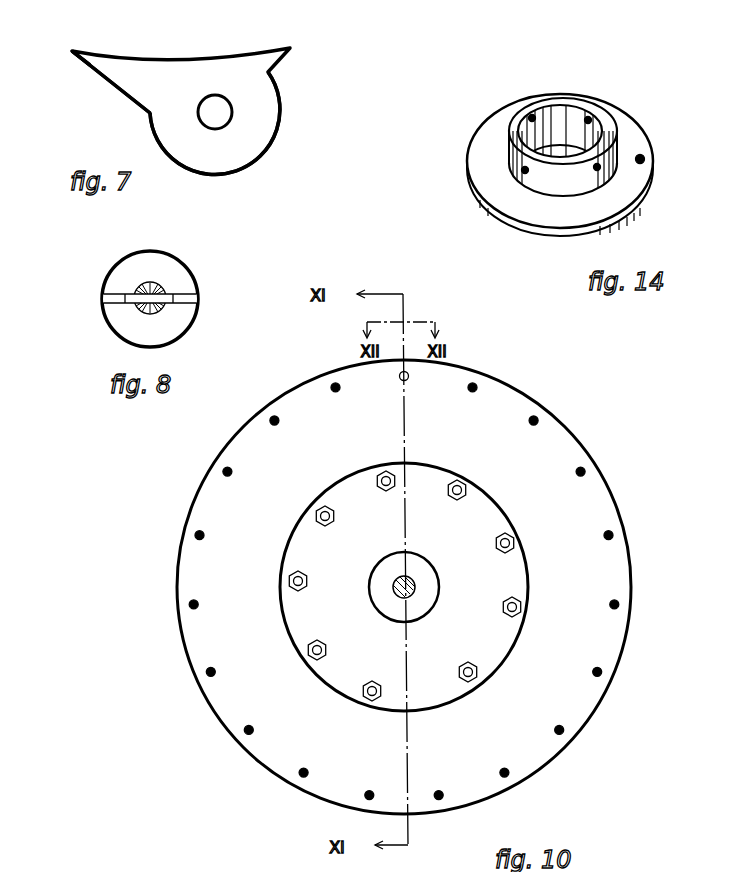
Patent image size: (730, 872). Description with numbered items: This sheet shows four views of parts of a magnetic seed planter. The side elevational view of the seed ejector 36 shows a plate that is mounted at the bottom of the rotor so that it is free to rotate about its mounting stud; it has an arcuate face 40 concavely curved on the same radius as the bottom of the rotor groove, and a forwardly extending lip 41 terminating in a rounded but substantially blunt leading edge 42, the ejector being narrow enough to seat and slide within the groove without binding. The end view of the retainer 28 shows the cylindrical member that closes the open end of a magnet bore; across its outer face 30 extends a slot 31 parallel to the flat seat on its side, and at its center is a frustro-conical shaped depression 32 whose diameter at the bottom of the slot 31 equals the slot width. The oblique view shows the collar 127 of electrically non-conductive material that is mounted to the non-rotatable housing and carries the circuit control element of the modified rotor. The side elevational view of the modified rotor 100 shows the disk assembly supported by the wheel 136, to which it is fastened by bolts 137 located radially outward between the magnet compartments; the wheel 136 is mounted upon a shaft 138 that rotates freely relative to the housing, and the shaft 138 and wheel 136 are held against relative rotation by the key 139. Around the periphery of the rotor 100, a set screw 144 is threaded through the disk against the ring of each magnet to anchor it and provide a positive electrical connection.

In FIG. 7, the arcuate face 40 is at (190, 55).
In FIG. 7, the forwardly extending lip 41 is at (127, 77).
In FIG. 7, the leading edge 42 is at (70, 57).
In FIG. 7, the ejector 36 is at (255, 138).
In FIG. 8, the retainer 28 is at (118, 272).
In FIG. 8, the outer face 30 is at (150, 269).
In FIG. 8, the slot 31 is at (180, 298).
In FIG. 8, the frustro-conical shaped depression 32 is at (142, 314).
In FIG. 14, the collar 127 is at (633, 128).
In FIG. 10, the modified rotor 100 is at (600, 492).
In FIG. 10, the set screw 144 is at (543, 415).
In FIG. 10, the wheel 136 is at (303, 553).
In FIG. 10, the bolts 137 is at (317, 508).
In FIG. 10, the shaft 138 is at (413, 587).
In FIG. 10, the key 139 is at (407, 578).